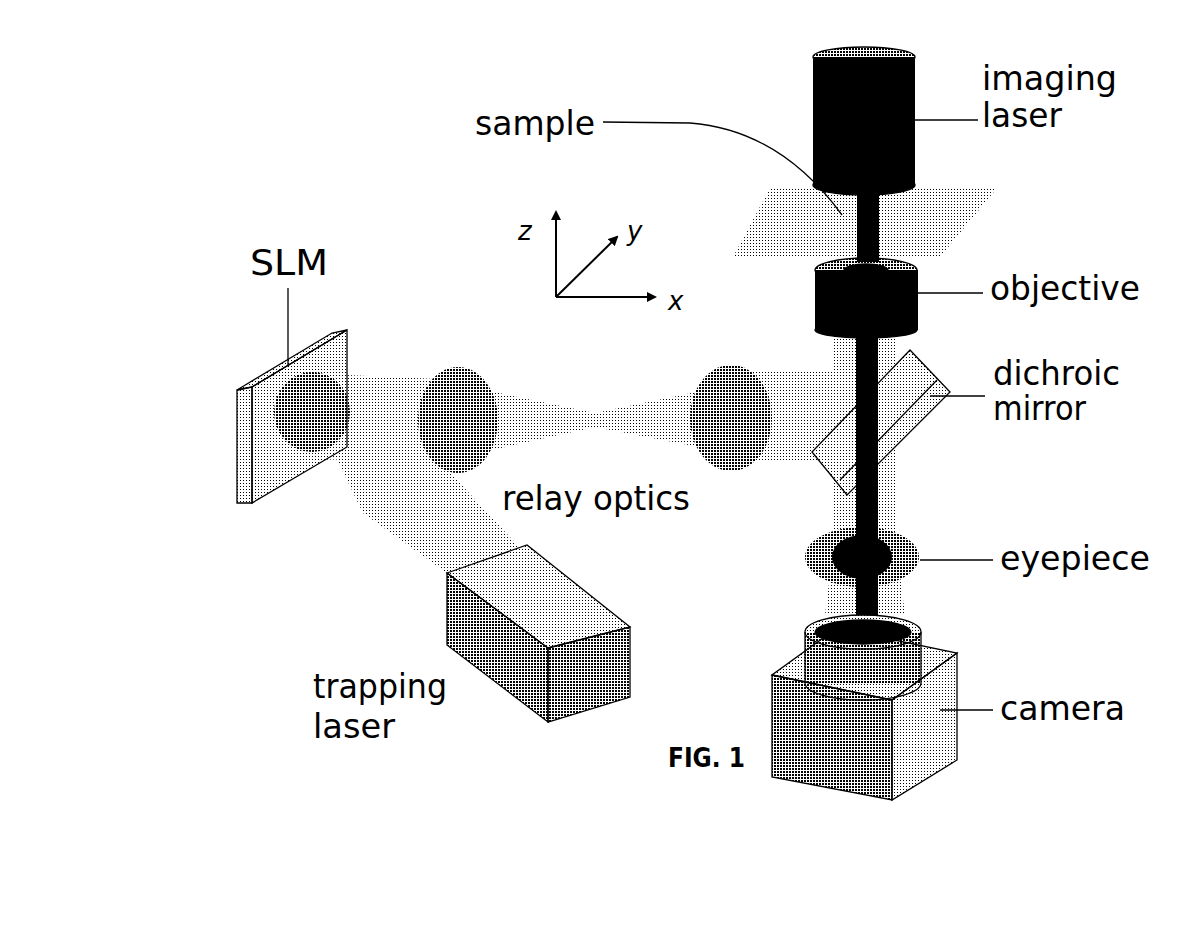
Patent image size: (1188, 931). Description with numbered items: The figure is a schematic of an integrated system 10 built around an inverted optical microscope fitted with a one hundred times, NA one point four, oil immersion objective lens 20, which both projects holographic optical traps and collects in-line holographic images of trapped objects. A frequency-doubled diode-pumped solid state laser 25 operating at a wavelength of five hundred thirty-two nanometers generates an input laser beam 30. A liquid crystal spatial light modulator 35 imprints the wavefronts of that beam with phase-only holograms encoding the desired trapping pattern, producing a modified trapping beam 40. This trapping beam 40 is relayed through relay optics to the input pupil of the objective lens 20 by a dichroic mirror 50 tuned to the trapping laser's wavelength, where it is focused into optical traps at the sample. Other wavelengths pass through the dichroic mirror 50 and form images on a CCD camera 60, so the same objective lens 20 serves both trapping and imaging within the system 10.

The integrated system 10 is at (343, 136).
The objective lens 20 is at (913, 285).
The solid state laser 25 is at (585, 678).
The input laser beam 30 is at (830, 258).
The liquid crystal spatial light modulator 35 is at (263, 410).
The modified trapping beam 40 is at (363, 510).
The dichroic mirror 50 is at (880, 437).
The CCD camera 60 is at (898, 742).